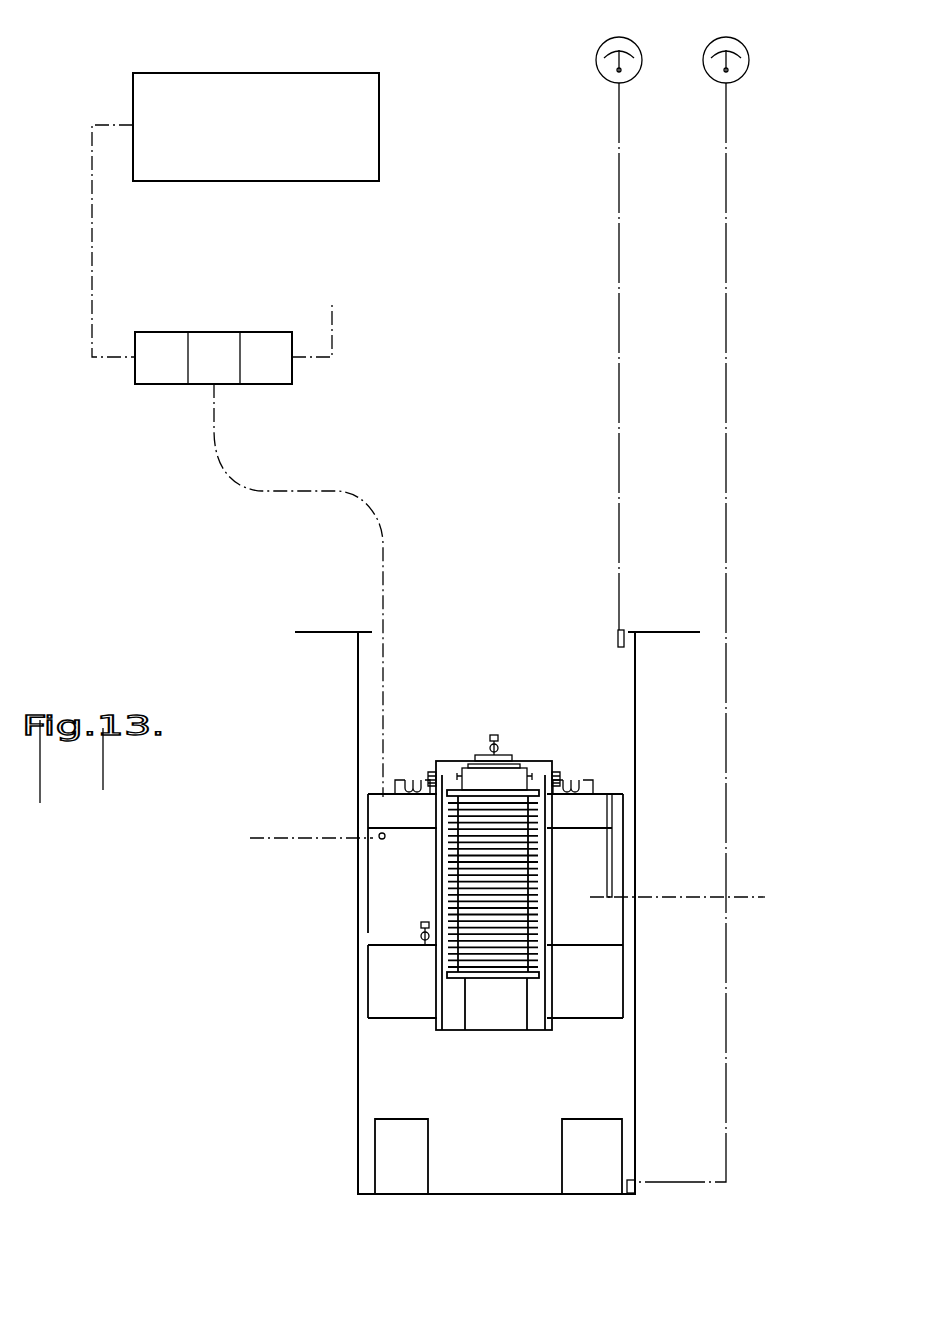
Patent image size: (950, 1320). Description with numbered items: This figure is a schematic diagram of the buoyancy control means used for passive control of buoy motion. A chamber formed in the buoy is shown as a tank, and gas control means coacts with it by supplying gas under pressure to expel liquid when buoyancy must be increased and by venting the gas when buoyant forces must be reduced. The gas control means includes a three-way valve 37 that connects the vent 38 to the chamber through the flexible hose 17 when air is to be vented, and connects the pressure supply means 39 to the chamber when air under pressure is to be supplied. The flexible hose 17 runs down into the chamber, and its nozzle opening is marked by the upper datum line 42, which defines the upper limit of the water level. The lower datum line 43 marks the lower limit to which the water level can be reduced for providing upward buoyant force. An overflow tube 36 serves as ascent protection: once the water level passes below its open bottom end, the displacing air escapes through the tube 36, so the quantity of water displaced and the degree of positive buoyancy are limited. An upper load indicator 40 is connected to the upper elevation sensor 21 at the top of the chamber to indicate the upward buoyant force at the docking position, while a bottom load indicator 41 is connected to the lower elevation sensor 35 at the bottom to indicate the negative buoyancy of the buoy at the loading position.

The flexible hose 17 is at (225, 472).
The upper elevation sensor 21 is at (618, 640).
The lower elevation sensor 35 is at (632, 1200).
The overflow tube 36 is at (612, 866).
The three-way valve 37 is at (157, 337).
The vent 38 is at (334, 332).
The pressure supply means 39 is at (231, 82).
The upper load indicator 40 is at (596, 62).
The bottom load indicator 41 is at (745, 79).
The upper datum line 42 is at (250, 838).
The lower datum line 43 is at (742, 897).